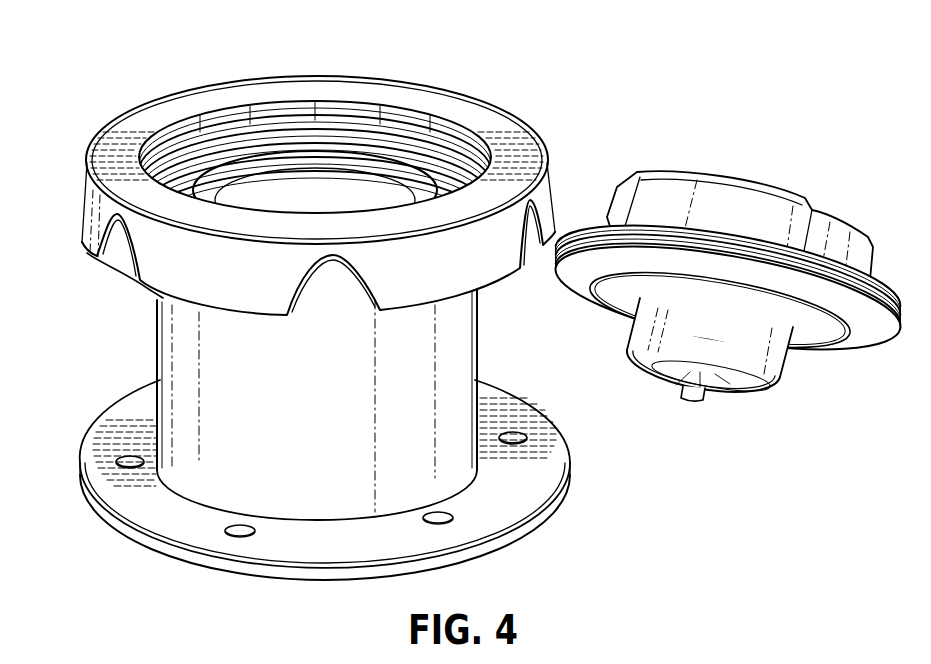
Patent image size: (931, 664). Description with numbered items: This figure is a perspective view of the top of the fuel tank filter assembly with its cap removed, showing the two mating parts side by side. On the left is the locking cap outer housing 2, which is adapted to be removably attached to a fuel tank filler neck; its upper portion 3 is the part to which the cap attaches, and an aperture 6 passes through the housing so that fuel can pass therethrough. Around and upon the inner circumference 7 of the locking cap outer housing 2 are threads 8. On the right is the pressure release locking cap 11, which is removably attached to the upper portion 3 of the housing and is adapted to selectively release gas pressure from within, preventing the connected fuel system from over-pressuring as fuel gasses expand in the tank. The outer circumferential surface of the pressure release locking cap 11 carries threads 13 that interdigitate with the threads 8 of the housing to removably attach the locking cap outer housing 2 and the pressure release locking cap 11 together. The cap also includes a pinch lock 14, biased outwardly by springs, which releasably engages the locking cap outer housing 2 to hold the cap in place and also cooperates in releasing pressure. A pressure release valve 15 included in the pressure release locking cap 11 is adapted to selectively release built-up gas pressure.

The locking cap outer housing 2 is at (72, 96).
The upper portion 3 is at (152, 113).
The aperture 6 is at (320, 182).
The inner circumference 7 is at (175, 190).
The threads 8 is at (246, 120).
The pressure release locking cap 11 is at (790, 158).
The threads 13 is at (687, 234).
The pinch lock 14 is at (862, 242).
The pressure release valve 15 is at (717, 391).